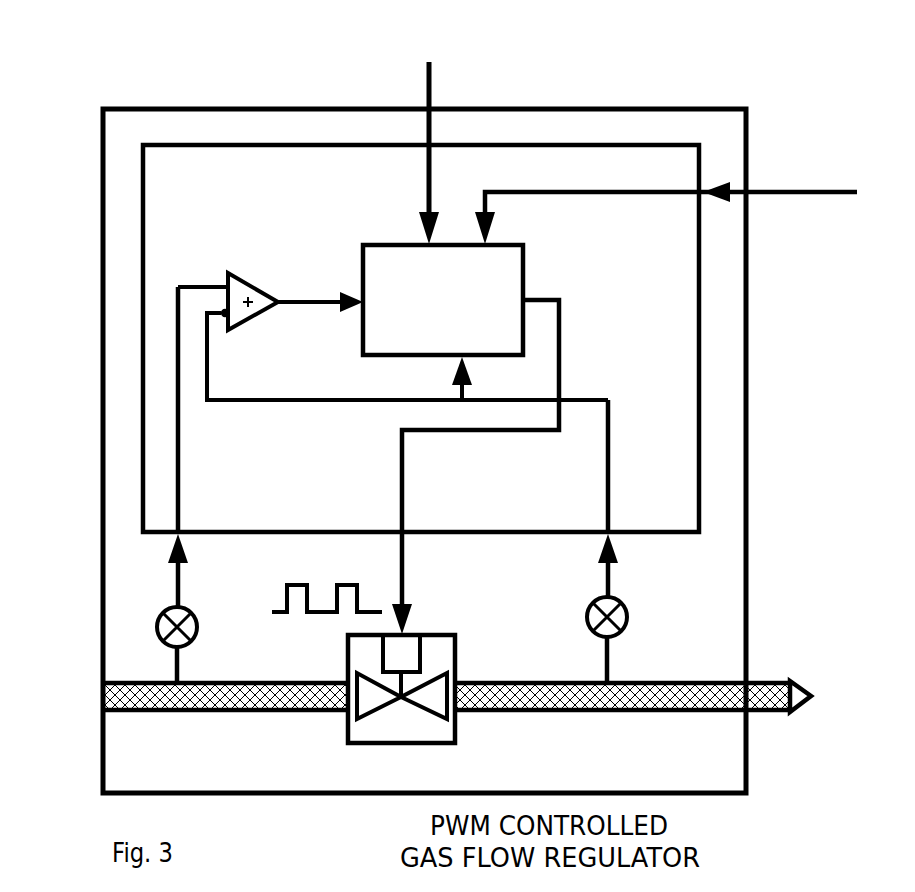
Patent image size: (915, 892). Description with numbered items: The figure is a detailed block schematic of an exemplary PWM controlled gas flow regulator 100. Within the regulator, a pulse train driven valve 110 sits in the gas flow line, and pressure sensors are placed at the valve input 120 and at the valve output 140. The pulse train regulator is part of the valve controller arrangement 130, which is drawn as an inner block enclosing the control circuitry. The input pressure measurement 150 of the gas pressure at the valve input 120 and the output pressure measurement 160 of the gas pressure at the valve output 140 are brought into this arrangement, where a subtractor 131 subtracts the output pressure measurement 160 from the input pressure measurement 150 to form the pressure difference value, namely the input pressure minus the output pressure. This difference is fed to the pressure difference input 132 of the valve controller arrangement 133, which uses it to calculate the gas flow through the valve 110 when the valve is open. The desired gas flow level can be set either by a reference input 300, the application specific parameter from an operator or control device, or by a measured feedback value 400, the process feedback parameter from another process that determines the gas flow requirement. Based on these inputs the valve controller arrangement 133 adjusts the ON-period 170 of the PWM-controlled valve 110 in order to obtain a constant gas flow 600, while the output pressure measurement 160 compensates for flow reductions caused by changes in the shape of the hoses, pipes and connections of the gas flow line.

The gas flow regulator 100 is at (424, 451).
The pulse train driven valve 110 is at (428, 698).
The valve input 120 is at (199, 645).
The valve controller arrangement 130 is at (421, 338).
The subtractor 131 is at (251, 296).
The pressure difference input 132 is at (320, 289).
The valve controller arrangement 133 is at (407, 322).
The valve output 140 is at (628, 639).
The input pressure measurement 150 is at (207, 447).
The output pressure measurement 160 is at (606, 498).
The ON-period 170 is at (415, 467).
The reference input 300 is at (411, 137).
The measured feedback value 400 is at (687, 210).
The constant gas flow 600 is at (478, 715).